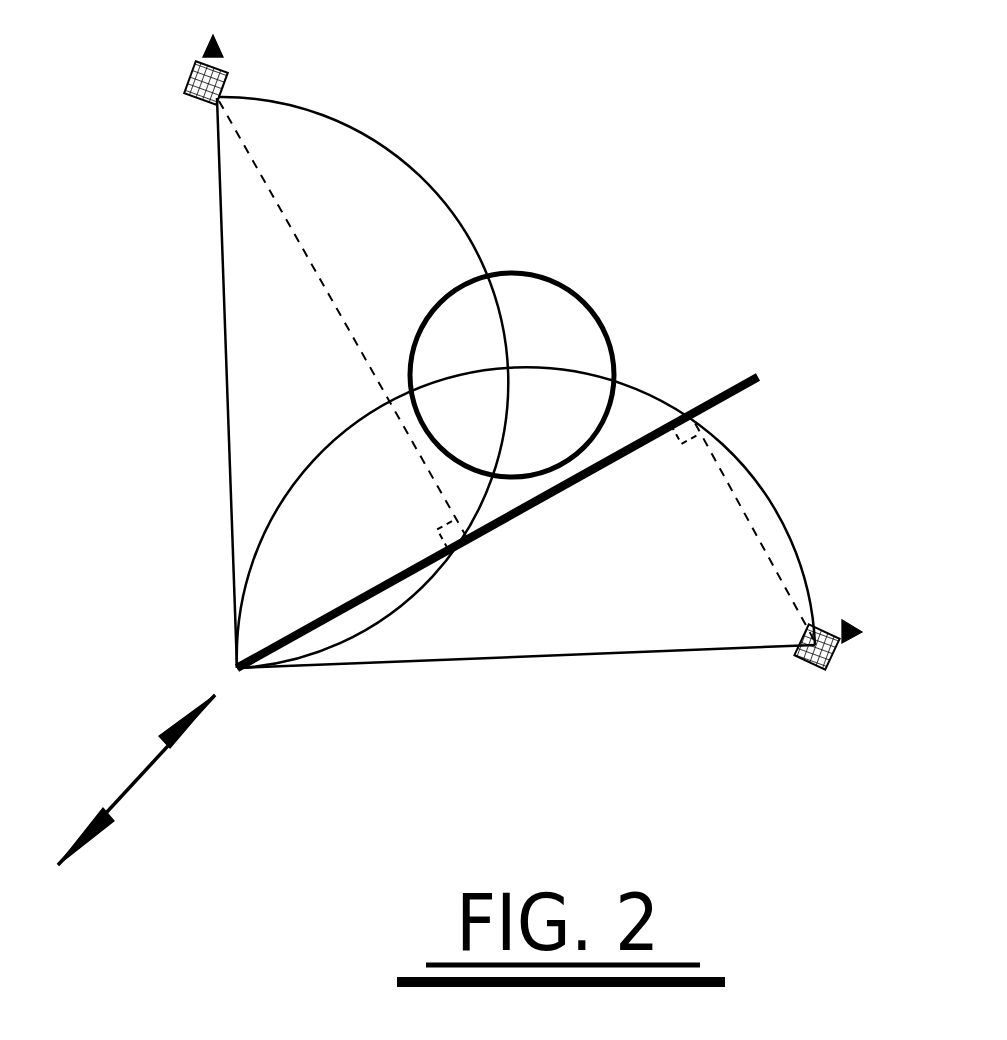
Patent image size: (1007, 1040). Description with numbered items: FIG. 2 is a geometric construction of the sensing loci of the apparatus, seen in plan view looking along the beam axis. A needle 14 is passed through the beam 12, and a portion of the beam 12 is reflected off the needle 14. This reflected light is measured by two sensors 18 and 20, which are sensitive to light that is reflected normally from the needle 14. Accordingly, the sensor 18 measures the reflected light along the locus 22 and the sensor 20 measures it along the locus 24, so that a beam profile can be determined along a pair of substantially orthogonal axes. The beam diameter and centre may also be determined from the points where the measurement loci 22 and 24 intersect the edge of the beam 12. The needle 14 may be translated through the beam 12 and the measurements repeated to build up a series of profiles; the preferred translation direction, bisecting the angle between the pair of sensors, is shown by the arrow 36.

The beam 12 is at (527, 327).
The needle 14 is at (743, 402).
The sensor 18 is at (803, 667).
The sensor 20 is at (195, 95).
The measurement locus 22 is at (785, 532).
The measurement locus 24 is at (410, 152).
The arrow 36 is at (136, 780).